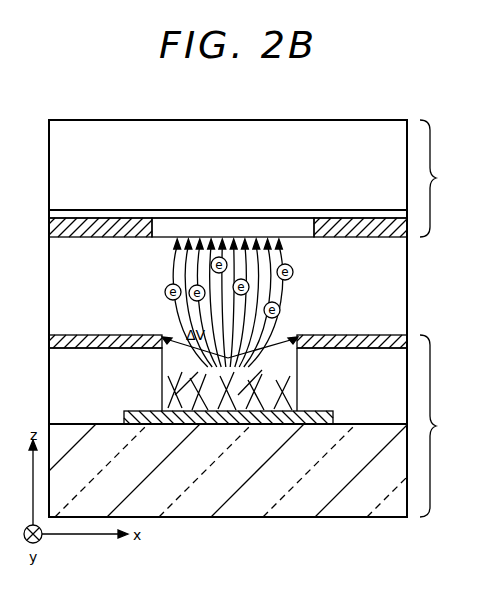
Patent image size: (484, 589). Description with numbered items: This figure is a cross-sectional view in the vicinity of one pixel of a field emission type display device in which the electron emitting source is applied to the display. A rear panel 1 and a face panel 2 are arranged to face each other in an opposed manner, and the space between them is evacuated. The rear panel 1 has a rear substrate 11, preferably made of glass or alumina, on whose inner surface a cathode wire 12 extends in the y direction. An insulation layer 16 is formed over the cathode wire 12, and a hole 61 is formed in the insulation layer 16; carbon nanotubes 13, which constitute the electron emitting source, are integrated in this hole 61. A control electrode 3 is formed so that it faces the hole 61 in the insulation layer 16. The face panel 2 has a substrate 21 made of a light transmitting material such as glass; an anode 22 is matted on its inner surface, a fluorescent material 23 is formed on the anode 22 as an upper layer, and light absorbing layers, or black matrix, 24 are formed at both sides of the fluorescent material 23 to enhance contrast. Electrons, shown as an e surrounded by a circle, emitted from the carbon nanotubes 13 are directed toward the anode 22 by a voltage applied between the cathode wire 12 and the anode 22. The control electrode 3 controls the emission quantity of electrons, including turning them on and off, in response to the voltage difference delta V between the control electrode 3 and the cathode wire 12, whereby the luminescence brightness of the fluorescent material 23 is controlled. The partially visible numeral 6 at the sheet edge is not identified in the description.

The rear panel 1 is at (437, 426).
The face panel 2 is at (436, 178).
The control electrode 3 is at (68, 336).
The (cropped numeral) 6 is at (3, 173).
The rear substrate 11 is at (364, 506).
The cathode wire 12 is at (195, 421).
The carbon nanotubes 13 is at (266, 405).
The insulation layer 16 is at (57, 387).
The substrate 21 is at (244, 127).
The anode 22 is at (93, 214).
The fluorescent material 23 is at (297, 222).
The light absorbing layers (black matrix) 24 is at (133, 232).
The hole 61 is at (297, 380).